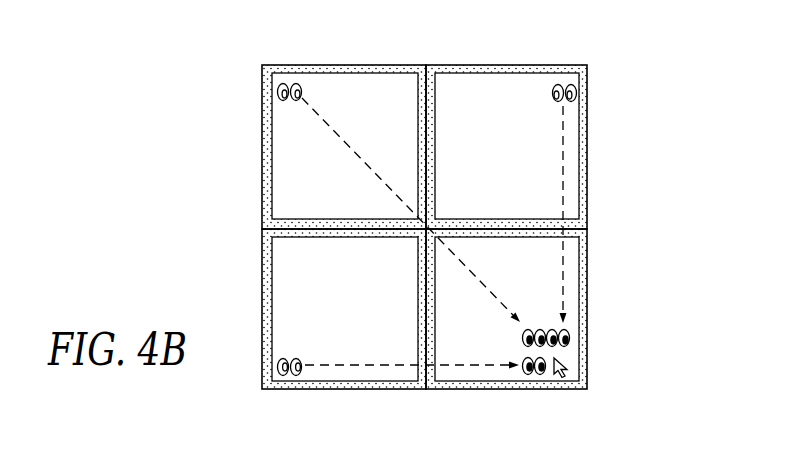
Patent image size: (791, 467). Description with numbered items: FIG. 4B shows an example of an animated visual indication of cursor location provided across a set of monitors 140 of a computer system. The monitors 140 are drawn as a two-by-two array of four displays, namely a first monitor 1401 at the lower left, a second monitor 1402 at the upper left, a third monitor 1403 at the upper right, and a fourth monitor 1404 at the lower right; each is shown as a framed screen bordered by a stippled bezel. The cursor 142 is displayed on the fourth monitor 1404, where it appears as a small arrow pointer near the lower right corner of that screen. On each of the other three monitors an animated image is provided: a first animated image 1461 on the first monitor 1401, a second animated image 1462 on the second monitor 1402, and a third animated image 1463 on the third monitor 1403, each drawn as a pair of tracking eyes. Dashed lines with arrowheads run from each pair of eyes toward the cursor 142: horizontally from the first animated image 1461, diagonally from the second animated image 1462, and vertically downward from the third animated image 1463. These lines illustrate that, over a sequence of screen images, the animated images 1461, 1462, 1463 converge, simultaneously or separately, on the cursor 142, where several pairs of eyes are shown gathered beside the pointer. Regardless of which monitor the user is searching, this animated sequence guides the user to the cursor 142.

The monitors 140 is at (182, 139).
The first monitor 1401 is at (312, 309).
The second monitor 1402 is at (314, 147).
The third monitor 1403 is at (544, 150).
The fourth monitor 1404 is at (545, 314).
The animated image 1461 is at (321, 404).
The animated image 1462 is at (312, 58).
The animated image 1463 is at (533, 58).
The cursor 142 is at (561, 378).